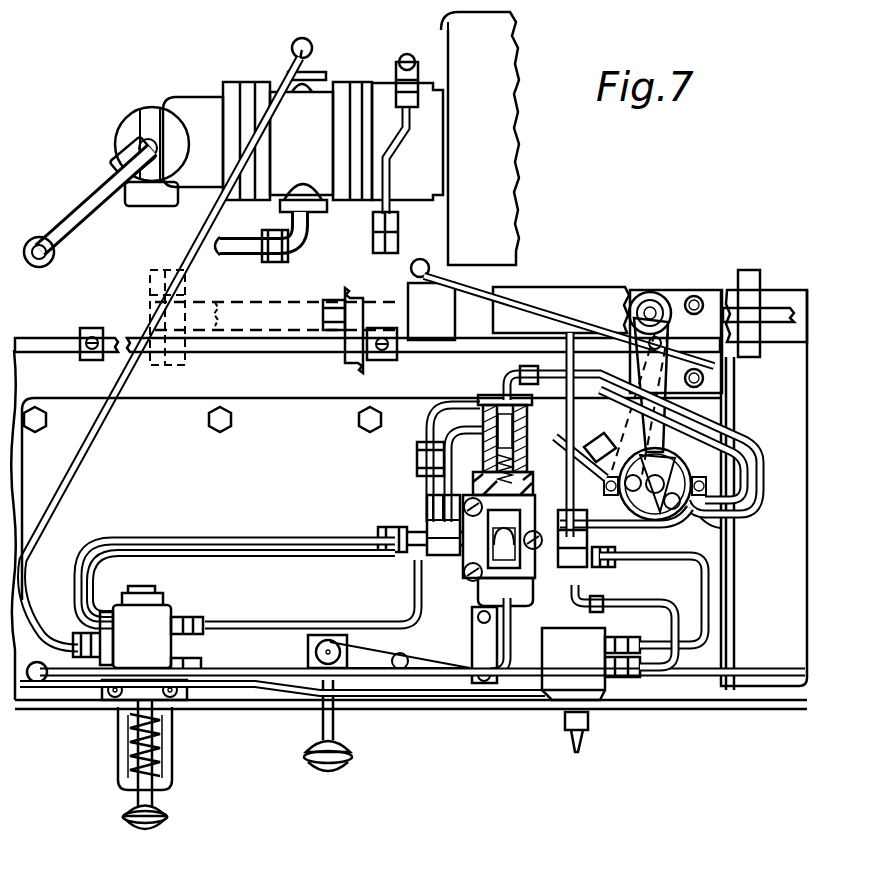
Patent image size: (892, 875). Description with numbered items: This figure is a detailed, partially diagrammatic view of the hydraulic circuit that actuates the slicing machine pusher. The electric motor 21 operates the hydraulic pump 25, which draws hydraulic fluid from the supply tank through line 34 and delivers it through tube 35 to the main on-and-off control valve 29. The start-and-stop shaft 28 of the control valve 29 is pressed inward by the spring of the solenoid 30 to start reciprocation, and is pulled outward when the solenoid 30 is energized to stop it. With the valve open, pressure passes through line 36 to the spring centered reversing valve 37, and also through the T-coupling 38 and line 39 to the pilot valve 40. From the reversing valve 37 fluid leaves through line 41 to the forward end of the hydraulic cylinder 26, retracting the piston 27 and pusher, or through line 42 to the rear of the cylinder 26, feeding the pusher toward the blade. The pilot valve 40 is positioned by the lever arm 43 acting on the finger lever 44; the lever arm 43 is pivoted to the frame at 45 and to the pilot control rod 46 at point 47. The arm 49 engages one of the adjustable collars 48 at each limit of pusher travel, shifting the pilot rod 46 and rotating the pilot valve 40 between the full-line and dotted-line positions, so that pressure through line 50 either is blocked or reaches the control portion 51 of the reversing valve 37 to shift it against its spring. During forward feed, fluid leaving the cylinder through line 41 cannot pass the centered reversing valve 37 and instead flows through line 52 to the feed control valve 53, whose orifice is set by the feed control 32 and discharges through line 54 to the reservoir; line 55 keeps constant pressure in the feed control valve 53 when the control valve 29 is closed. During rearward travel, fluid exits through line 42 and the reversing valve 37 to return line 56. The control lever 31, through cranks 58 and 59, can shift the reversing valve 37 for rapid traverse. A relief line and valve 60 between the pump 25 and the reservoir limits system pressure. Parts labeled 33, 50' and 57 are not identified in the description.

The electric motor 21 is at (512, 143).
The hydraulic pump 25 is at (325, 92).
The hydraulic cylinder 26 is at (605, 298).
The piston 27 is at (300, 312).
The start-and-stop shaft 28 is at (133, 720).
The control valve 29 is at (165, 622).
The solenoid 30 is at (174, 765).
The control lever 31 is at (326, 770).
The feed control 32 is at (565, 724).
The base plate 33 is at (287, 402).
The line 34 is at (243, 262).
The tube 35 is at (95, 452).
The line 36 is at (178, 540).
The spring centered reversing valve 37 is at (455, 566).
The T-coupling 38 is at (428, 550).
The line 39 is at (436, 464).
The pilot valve 40 is at (668, 478).
The line 41 is at (520, 308).
The line 42 is at (778, 322).
The lever arm 43 is at (676, 330).
The finger lever 44 is at (700, 504).
The pivot 45 is at (652, 312).
The pilot control rod 46 is at (42, 348).
The pivot point 47 is at (647, 350).
The adjustable collars 48 is at (88, 362).
The arm 49 is at (345, 366).
The line 50 is at (642, 450).
The hydraulic line 50' is at (450, 442).
The control portion 51 is at (480, 412).
The line 52 is at (680, 632).
The feed control valve 53 is at (560, 682).
The line 54 is at (724, 592).
The line 55 is at (258, 668).
The return line 56 is at (268, 700).
The hydraulic line 57 is at (707, 567).
The crank 58 is at (367, 650).
The crank 59 is at (484, 641).
The relief line and valve 60 is at (105, 180).